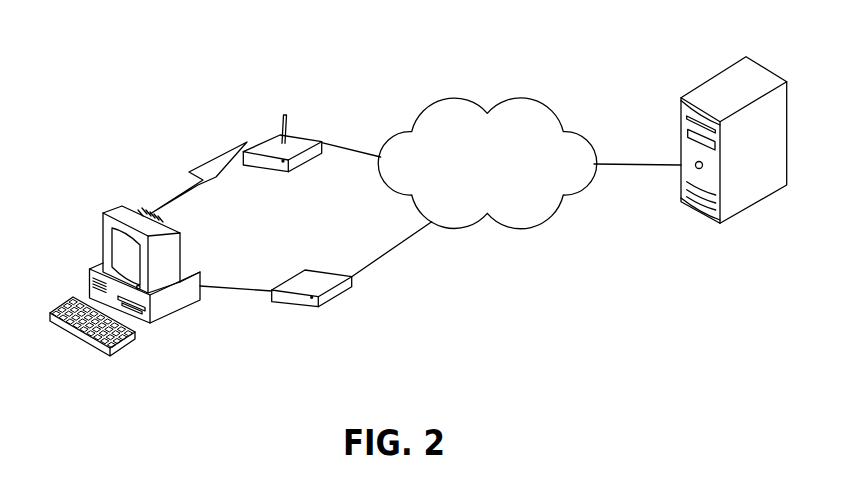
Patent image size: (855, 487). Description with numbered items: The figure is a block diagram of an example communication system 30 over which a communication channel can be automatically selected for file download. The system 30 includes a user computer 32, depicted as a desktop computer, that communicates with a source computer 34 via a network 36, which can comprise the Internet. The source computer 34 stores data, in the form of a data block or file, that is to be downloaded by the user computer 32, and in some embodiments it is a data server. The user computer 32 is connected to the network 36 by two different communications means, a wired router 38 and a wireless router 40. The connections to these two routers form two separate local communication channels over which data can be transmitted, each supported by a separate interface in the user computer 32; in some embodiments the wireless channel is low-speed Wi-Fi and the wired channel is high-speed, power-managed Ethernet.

The communication system 30 is at (93, 72).
The user computer 32 is at (67, 227).
The source computer 34 is at (658, 108).
The network 36 is at (498, 175).
The wired router 38 is at (348, 314).
The wireless router 40 is at (316, 122).